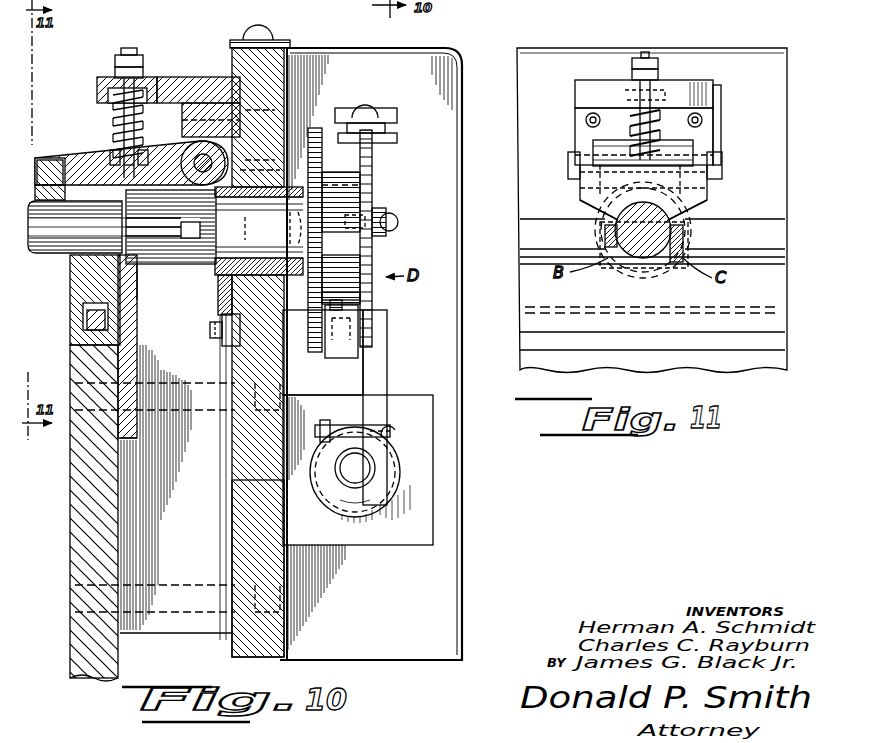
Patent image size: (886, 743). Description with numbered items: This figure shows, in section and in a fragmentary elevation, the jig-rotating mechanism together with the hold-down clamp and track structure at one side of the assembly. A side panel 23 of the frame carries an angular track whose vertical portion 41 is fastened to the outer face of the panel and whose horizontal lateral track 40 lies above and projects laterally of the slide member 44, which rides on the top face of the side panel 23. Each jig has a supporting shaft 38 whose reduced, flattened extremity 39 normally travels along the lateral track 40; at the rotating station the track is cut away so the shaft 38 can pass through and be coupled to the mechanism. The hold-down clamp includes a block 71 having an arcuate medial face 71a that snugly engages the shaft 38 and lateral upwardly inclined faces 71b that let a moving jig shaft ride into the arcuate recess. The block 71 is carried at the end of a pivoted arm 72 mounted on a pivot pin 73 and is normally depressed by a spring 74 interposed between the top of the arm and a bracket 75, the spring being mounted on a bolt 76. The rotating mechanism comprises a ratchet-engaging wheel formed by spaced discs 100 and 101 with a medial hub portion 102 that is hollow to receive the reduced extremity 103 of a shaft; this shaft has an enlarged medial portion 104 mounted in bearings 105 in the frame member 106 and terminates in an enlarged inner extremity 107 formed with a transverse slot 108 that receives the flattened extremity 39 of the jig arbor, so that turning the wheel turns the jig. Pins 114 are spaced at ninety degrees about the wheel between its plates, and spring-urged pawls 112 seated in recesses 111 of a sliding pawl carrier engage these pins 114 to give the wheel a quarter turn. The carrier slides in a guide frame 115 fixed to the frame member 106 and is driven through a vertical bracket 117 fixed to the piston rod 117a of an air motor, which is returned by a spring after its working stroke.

In FIG. 10, the side panel 23 is at (70, 492).
In FIG. 10, the supporting shaft 38 is at (50, 248).
In FIG. 11, the supporting shaft 38 is at (648, 285).
In FIG. 10, the reduced flattened extremity 39 is at (165, 238).
In FIG. 11, the reduced flattened extremity 39 is at (625, 285).
In FIG. 10, the lateral elevated track 40 is at (143, 270).
In FIG. 10, the vertical track portion 41 is at (138, 402).
In FIG. 10, the slide member 44 is at (78, 291).
In FIG. 10, the block 71 is at (65, 193).
In FIG. 11, the block 71 is at (590, 193).
In FIG. 11, the arcuate medial face 71a is at (700, 201).
In FIG. 11, the inclined face 71b is at (700, 214).
In FIG. 10, the pivoted arm 72 is at (85, 160).
In FIG. 11, the pivoted arm 72 is at (695, 146).
In FIG. 10, the pivot pin 73 is at (181, 146).
In FIG. 11, the pivot pin 73 is at (718, 161).
In FIG. 10, the spring 74 is at (158, 104).
In FIG. 11, the spring 74 is at (644, 136).
In FIG. 10, the bracket 75 is at (218, 78).
In FIG. 11, the bracket 75 is at (670, 80).
In FIG. 10, the bolt 76 is at (136, 62).
In FIG. 11, the bolt 76 is at (651, 50).
In FIG. 10, the disc 100 is at (375, 161).
In FIG. 10, the disc 101 is at (322, 160).
In FIG. 10, the medial hub portion 102 is at (355, 206).
In FIG. 10, the reduced extremity 103 is at (388, 221).
In FIG. 10, the enlarged medial portion 104 is at (259, 227).
In FIG. 10, the bearing 105 is at (228, 298).
In FIG. 10, the frame member 106 is at (232, 527).
In FIG. 10, the enlarged inner extremity 107 is at (172, 262).
In FIG. 11, the enlarged inner extremity 107 is at (688, 250).
In FIG. 10, the transverse slot 108 is at (192, 232).
In FIG. 11, the transverse slot 108 is at (605, 233).
In FIG. 10, the recess 111 is at (358, 306).
In FIG. 10, the pawl 112 is at (362, 292).
In FIG. 10, the pin 114 is at (355, 184).
In FIG. 10, the guide frame 115 is at (300, 372).
In FIG. 10, the vertical bracket 117 is at (387, 367).
In FIG. 10, the piston rod 117a is at (352, 480).